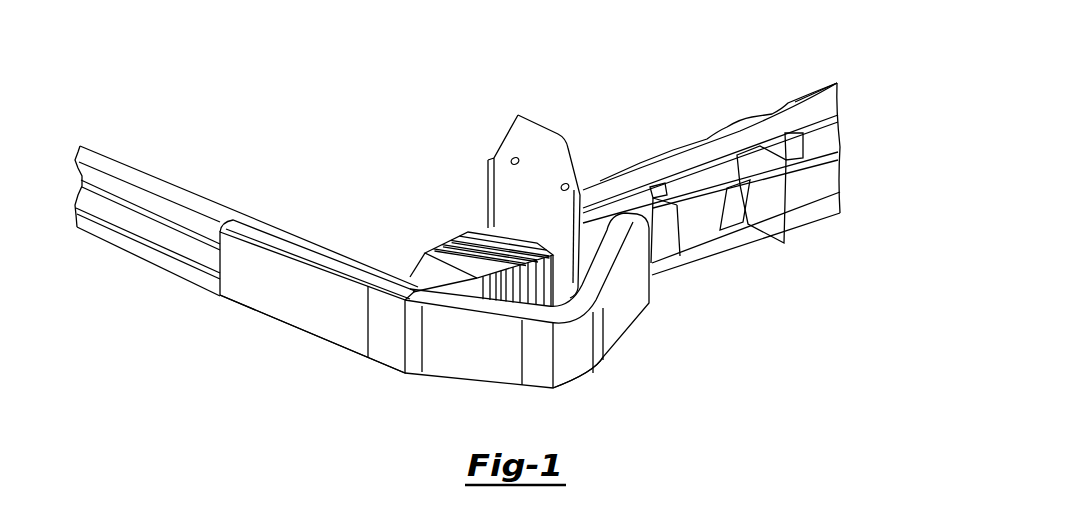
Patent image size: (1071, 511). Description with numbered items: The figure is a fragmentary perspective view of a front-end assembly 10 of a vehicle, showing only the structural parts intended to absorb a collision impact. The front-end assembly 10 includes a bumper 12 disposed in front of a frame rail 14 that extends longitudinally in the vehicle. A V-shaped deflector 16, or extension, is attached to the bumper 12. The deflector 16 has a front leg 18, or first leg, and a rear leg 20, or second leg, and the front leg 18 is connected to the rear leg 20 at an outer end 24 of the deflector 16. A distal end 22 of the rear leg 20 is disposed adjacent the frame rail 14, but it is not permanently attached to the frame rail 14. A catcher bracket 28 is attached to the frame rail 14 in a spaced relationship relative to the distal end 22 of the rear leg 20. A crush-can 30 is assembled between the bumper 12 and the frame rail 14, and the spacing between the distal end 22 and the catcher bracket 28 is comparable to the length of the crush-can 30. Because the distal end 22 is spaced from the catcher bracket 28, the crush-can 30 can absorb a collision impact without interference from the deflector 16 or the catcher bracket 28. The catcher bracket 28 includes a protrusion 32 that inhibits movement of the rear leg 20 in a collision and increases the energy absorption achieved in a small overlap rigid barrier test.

The front-end assembly 10 is at (301, 379).
The bumper 12 is at (138, 178).
The frame rail 14 is at (711, 171).
The V-shaped deflector 16 is at (448, 377).
The front leg 18 is at (484, 359).
The rear leg 20 is at (549, 326).
The distal end 22 is at (647, 197).
The outer end 24 is at (572, 386).
The catcher bracket 28 is at (795, 239).
The crush-can 30 is at (440, 250).
The protrusion 32 is at (770, 205).